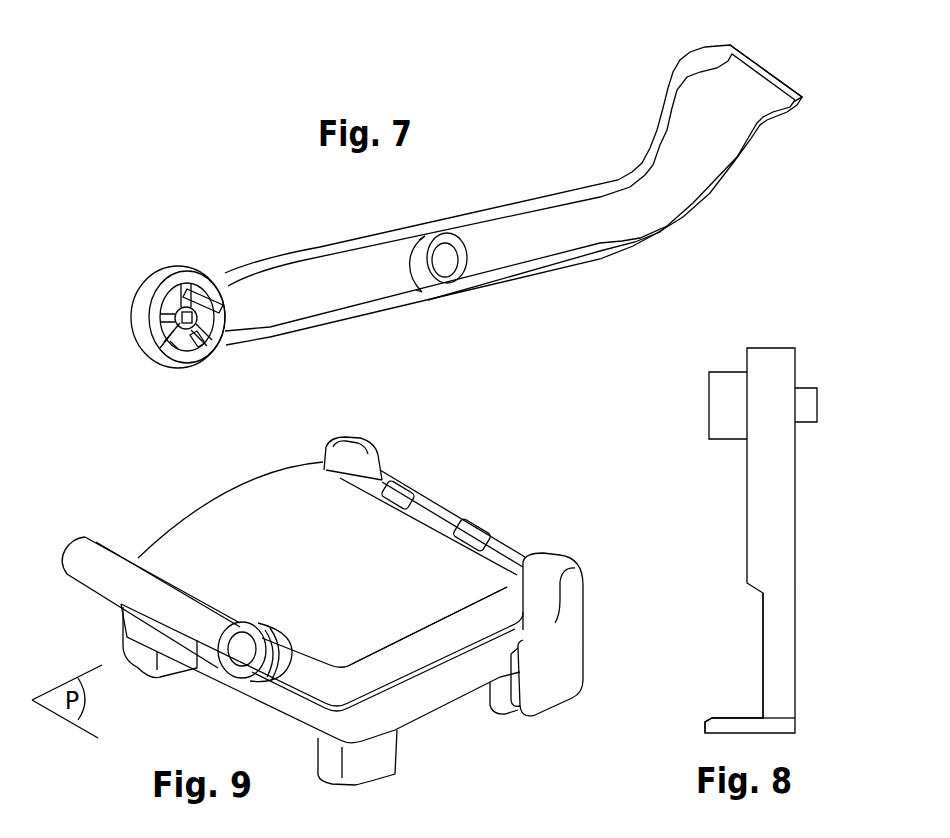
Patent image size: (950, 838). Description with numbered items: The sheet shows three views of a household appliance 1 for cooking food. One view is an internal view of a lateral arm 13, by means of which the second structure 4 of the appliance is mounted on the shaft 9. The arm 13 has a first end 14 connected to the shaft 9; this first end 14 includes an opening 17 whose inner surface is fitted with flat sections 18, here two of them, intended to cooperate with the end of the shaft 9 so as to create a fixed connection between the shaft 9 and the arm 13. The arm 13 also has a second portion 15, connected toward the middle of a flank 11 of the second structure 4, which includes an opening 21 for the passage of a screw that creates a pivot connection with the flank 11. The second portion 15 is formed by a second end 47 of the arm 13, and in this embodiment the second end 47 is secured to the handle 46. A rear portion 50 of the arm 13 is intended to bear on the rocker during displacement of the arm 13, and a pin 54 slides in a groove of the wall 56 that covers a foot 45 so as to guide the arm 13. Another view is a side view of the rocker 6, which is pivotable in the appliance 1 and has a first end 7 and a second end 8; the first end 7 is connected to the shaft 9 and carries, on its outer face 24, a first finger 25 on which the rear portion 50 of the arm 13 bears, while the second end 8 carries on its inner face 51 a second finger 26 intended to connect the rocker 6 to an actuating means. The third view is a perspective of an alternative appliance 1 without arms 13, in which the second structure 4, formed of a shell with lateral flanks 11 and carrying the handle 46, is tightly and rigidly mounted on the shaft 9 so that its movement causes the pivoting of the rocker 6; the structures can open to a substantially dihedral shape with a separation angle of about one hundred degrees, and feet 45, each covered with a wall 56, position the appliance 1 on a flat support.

In FIG. 9, the household appliance 1 is at (497, 497).
In FIG. 9, the second structure 4 is at (255, 530).
In FIG. 8, the rocker 6 is at (716, 347).
In FIG. 8, the first end of the rocker 7 is at (770, 360).
In FIG. 8, the second end of the rocker 8 is at (781, 721).
In FIG. 9, the shaft 9 is at (438, 512).
In FIG. 9, the lateral flank 11 is at (410, 658).
In FIG. 7, the lateral arm 13 is at (290, 183).
In FIG. 7, the first end of the arm 14 is at (154, 283).
In FIG. 7, the second portion of the arm 15 is at (450, 219).
In FIG. 7, the opening 17 is at (178, 320).
In FIG. 7, the flat sections 18 is at (177, 352).
In FIG. 7, the opening 21 is at (455, 258).
In FIG. 8, the outer face 24 is at (796, 435).
In FIG. 8, the first finger 25 is at (806, 398).
In FIG. 8, the second finger 26 is at (722, 725).
In FIG. 9, the feet 45 is at (143, 667).
In FIG. 9, the handle 46 is at (78, 556).
In FIG. 7, the second end of the arm 47 is at (777, 77).
In FIG. 7, the rear portion of the arm 50 is at (200, 348).
In FIG. 8, the inner face 51 is at (762, 695).
In FIG. 7, the pin 54 is at (238, 296).
In FIG. 9, the wall 56 is at (553, 660).